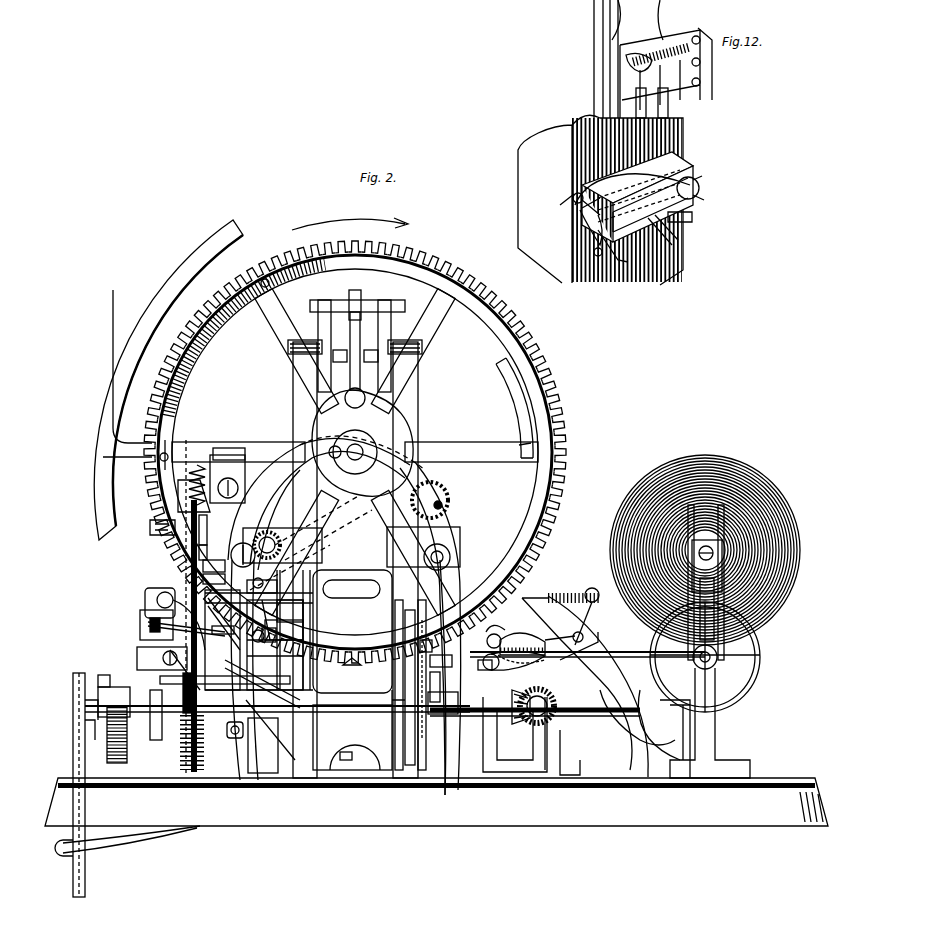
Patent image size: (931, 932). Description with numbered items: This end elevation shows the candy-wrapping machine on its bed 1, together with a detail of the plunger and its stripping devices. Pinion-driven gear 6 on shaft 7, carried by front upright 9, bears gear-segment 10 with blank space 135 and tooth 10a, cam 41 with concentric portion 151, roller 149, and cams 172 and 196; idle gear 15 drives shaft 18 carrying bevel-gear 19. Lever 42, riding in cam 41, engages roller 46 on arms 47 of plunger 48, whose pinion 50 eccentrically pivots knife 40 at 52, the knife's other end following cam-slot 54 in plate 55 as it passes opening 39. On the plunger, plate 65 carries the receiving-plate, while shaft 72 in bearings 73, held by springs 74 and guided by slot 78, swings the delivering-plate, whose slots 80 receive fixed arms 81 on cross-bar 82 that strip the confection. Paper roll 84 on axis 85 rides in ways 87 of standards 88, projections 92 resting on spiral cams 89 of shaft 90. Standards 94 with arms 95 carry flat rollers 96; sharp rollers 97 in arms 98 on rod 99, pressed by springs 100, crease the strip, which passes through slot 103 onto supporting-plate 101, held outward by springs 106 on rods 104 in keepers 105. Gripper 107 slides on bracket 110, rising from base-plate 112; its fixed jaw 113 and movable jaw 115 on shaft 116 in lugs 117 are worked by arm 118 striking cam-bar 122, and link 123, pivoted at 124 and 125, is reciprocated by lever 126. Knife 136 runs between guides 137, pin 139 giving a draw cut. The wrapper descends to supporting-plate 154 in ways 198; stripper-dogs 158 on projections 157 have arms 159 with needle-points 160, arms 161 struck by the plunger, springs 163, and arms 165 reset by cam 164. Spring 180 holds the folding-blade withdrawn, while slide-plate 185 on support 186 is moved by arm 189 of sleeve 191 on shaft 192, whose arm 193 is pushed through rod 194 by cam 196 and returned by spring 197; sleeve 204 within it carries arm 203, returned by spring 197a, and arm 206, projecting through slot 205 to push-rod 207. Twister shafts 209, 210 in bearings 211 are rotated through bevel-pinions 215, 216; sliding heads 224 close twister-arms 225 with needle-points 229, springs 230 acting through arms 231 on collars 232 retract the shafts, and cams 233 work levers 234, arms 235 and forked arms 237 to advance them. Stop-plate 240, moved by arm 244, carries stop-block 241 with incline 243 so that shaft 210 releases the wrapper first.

In FIG. 2, the base 1 is at (775, 781).
In FIG. 2, the main gear wheel 6 is at (540, 362).
In FIG. 2, the cam 7 is at (362, 443).
In FIG. 2, the frame 9 is at (312, 590).
In FIG. 12, the frame 9 is at (540, 120).
In FIG. 2, the gear rim 10 is at (535, 520).
In FIG. 2, the gear rim portion 10a is at (504, 372).
In FIG. 2, the lever 15 is at (277, 520).
In FIG. 2, the pinion 18 is at (282, 545).
In FIG. 2, the shaft 19 is at (258, 556).
In FIG. 2, the slotted plate 39 is at (345, 583).
In FIG. 2, the lever arm 40 is at (452, 514).
In FIG. 2, the frame post 41 is at (425, 440).
In FIG. 2, the connecting rod 42 is at (356, 402).
In FIG. 2, the cross bar 46 is at (362, 302).
In FIG. 2, the guide posts 47 is at (366, 346).
In FIG. 12, the rods 48 is at (594, 76).
In FIG. 2, the small gear 50 is at (446, 492).
In FIG. 2, the pin 52 is at (446, 504).
In FIG. 2, the block 54 is at (262, 590).
In FIG. 2, the block 55 is at (290, 611).
In FIG. 12, the bracket 65 is at (612, 58).
In FIG. 12, the wire 72 is at (619, 20).
In FIG. 12, the link 73 is at (624, 62).
In FIG. 12, the spring 74 is at (672, 50).
In FIG. 12, the wire 78 is at (662, 20).
In FIG. 12, the bracket arms 80 is at (700, 76).
In FIG. 12, the contact 81 is at (641, 108).
In FIG. 12, the contact 82 is at (669, 105).
In FIG. 2, the coil drum 84 is at (742, 478).
In FIG. 2, the clamp block 85 is at (722, 556).
In FIG. 2, the guide posts 87 is at (708, 582).
In FIG. 2, the standard 88 is at (716, 727).
In FIG. 2, the hand wheel 89 is at (760, 657).
In FIG. 2, the hub 90 is at (712, 662).
In FIG. 2, the slide 92 is at (722, 590).
In FIG. 2, the lever 94 is at (580, 674).
In FIG. 2, the pawl 95 is at (521, 656).
In FIG. 2, the pin 96 is at (481, 674).
In FIG. 2, the pivot 97 is at (485, 635).
In FIG. 2, the pawl 98 is at (521, 633).
In FIG. 2, the pivot 99 is at (584, 636).
In FIG. 2, the spring 100 is at (574, 609).
In FIG. 2, the pin 101 is at (442, 663).
In FIG. 2, the pin 103 is at (437, 636).
In FIG. 2, the link 104 is at (447, 686).
In FIG. 2, the spring 105 is at (521, 647).
In FIG. 2, the lever arm 106 is at (585, 683).
In FIG. 2, the block 107 is at (304, 634).
In FIG. 2, the frame member 110 is at (254, 640).
In FIG. 2, the pin 112 is at (263, 576).
In FIG. 2, the bar 113 is at (305, 654).
In FIG. 2, the pivot block 115 is at (279, 629).
In FIG. 2, the link 116 is at (263, 620).
In FIG. 2, the lever 117 is at (242, 670).
In FIG. 2, the link 118 is at (225, 624).
In FIG. 2, the rod 122 is at (168, 715).
In FIG. 2, the spring 123 is at (185, 630).
In FIG. 2, the stop 124 is at (219, 630).
In FIG. 2, the block 125 is at (145, 618).
In FIG. 2, the latch 126 is at (150, 600).
In FIG. 2, the rim segment 135 is at (537, 431).
In FIG. 2, the bar 136 is at (420, 588).
In FIG. 2, the bar 137 is at (420, 632).
In FIG. 2, the slide 139 is at (406, 618).
In FIG. 2, the bearing block 149 is at (227, 487).
In FIG. 2, the lever 151 is at (108, 460).
In FIG. 12, the pin 154 is at (672, 244).
In FIG. 12, the screws 157 is at (682, 208).
In FIG. 12, the arm 158 is at (613, 246).
In FIG. 12, the spring 159 is at (612, 176).
In FIG. 12, the roller 160 is at (639, 196).
In FIG. 12, the roller shaft 161 is at (700, 196).
In FIG. 12, the pivot 163 is at (578, 205).
In FIG. 12, the arm 164 is at (582, 218).
In FIG. 12, the screws 165 is at (686, 222).
In FIG. 2, the arc segment 172 is at (126, 332).
In FIG. 2, the rod 180 is at (170, 629).
In FIG. 2, the housing 185 is at (358, 669).
In FIG. 12, the housing 185 is at (690, 170).
In FIG. 2, the stop 186 is at (388, 692).
In FIG. 2, the link 189 is at (270, 675).
In FIG. 2, the bar 191 is at (200, 676).
In FIG. 2, the block 192 is at (176, 484).
In FIG. 2, the rod 193 is at (185, 525).
In FIG. 2, the clamp 194 is at (151, 522).
In FIG. 2, the spring 196 is at (205, 330).
In FIG. 2, the spring 197 is at (200, 450).
In FIG. 2, the spring 197a is at (178, 770).
In FIG. 2, the arch 198 is at (352, 737).
In FIG. 2, the link 203 is at (272, 730).
In FIG. 2, the collar 204 is at (200, 565).
In FIG. 2, the collar 205 is at (200, 579).
In FIG. 2, the rod 206 is at (216, 530).
In FIG. 2, the rod 207 is at (217, 551).
In FIG. 2, the shaft 209 is at (566, 718).
In FIG. 2, the spring 210 is at (129, 735).
In FIG. 2, the bracket 211 is at (548, 758).
In FIG. 2, the bevel gear 215 is at (509, 701).
In FIG. 2, the ratchet wheel 216 is at (537, 697).
In FIG. 2, the pivot 224 is at (247, 736).
In FIG. 2, the shaft 225 is at (426, 700).
In FIG. 2, the block 229 is at (262, 745).
In FIG. 2, the arm 230 is at (640, 744).
In FIG. 2, the block 231 is at (112, 686).
In FIG. 2, the block 232 is at (104, 676).
In FIG. 2, the cam path 233 is at (380, 440).
In FIG. 2, the link 234 is at (275, 450).
In FIG. 2, the lever 235 is at (448, 790).
In FIG. 2, the bracket 237 is at (478, 722).
In FIG. 2, the rod 240 is at (88, 874).
In FIG. 2, the arm 241 is at (85, 727).
In FIG. 2, the arm 243 is at (85, 710).
In FIG. 2, the spring 244 is at (180, 833).